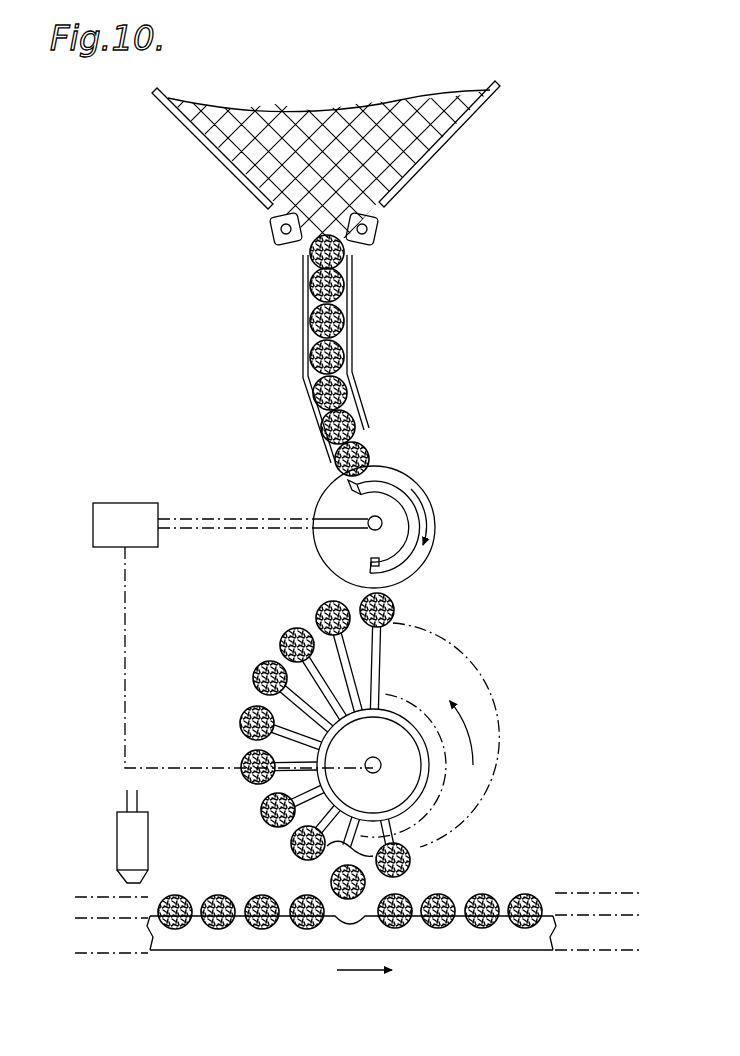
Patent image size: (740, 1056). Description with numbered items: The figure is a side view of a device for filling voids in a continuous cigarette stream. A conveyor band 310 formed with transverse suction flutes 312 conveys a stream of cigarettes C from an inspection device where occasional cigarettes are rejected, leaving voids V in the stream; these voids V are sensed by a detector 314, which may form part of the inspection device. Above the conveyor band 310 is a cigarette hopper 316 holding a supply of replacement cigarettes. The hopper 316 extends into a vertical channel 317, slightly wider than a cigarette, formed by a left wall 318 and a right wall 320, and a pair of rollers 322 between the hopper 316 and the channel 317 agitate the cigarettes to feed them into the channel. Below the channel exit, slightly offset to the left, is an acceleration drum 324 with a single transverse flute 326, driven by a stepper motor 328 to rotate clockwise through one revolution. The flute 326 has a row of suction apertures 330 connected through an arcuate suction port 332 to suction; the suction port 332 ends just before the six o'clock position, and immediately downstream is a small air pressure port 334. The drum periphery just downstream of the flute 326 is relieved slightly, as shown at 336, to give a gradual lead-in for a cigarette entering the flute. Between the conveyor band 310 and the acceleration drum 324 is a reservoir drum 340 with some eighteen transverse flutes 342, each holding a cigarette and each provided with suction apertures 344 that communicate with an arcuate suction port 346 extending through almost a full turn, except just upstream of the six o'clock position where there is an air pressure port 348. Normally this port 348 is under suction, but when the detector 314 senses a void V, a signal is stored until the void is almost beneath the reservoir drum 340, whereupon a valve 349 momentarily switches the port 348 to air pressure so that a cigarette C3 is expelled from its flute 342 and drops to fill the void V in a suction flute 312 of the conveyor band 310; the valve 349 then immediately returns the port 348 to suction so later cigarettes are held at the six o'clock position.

The cigarette hopper 316 is at (440, 146).
The rollers 322 is at (271, 230).
The vertical channel 317 is at (312, 268).
The left wall 318 is at (303, 303).
The right wall 320 is at (352, 306).
The transverse flute 326 is at (350, 470).
The acceleration drum 324 is at (434, 540).
The suction apertures 330 is at (360, 478).
The relieved periphery 336 is at (383, 462).
The air pressure port 334 is at (370, 562).
The arcuate suction port 332 is at (405, 497).
The stepper motor 328 is at (130, 503).
The air pressure port 348 is at (384, 775).
The valve 349 is at (370, 757).
The suction apertures 344 is at (381, 652).
The reservoir drum 340 is at (300, 672).
The transverse flutes 342 is at (393, 621).
The arcuate suction port 346 is at (415, 688).
The detector 314 is at (117, 840).
The conveyor band 310 is at (504, 948).
The suction flutes 312 is at (525, 897).
The cigarettes C is at (220, 895).
The cigarette C3 is at (331, 880).
The voids V is at (347, 925).